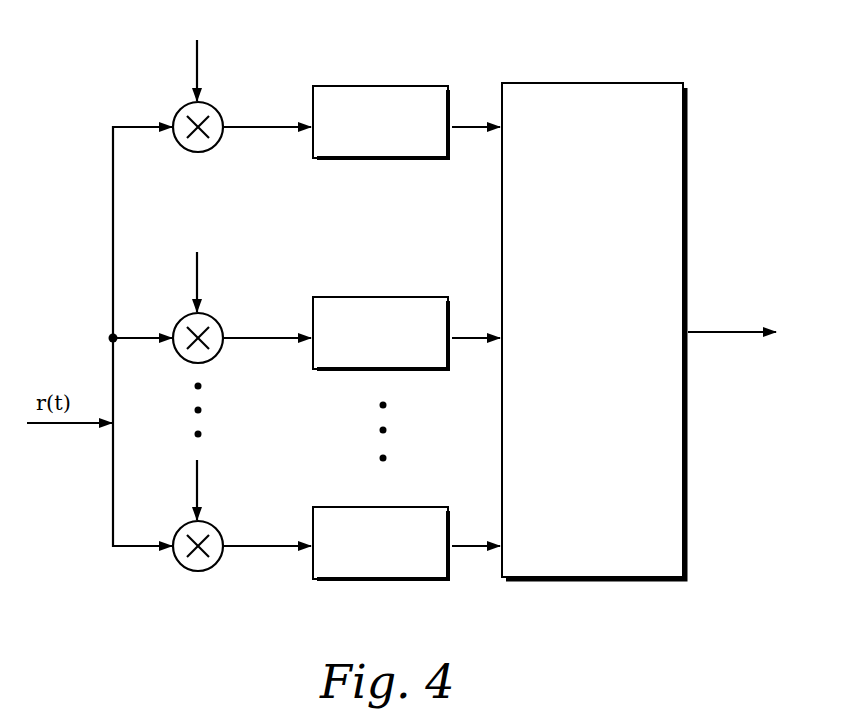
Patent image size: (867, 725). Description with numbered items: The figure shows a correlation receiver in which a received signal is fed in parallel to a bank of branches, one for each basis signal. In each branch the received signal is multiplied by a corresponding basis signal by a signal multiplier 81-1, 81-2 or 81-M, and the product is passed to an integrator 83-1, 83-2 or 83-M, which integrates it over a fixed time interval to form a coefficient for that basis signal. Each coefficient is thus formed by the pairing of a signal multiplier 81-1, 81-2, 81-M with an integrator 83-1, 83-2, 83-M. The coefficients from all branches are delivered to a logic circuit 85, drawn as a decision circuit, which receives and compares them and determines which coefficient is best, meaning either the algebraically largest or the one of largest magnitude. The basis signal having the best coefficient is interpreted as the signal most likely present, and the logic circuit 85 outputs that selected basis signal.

The signal multiplier 81-1 is at (206, 151).
The signal multiplier 81-2 is at (210, 361).
The signal multiplier 81-M is at (206, 570).
The integrator 83-1 is at (425, 86).
The integrator 83-2 is at (425, 297).
The integrator 83-M is at (420, 507).
The logic circuit 85 is at (590, 83).